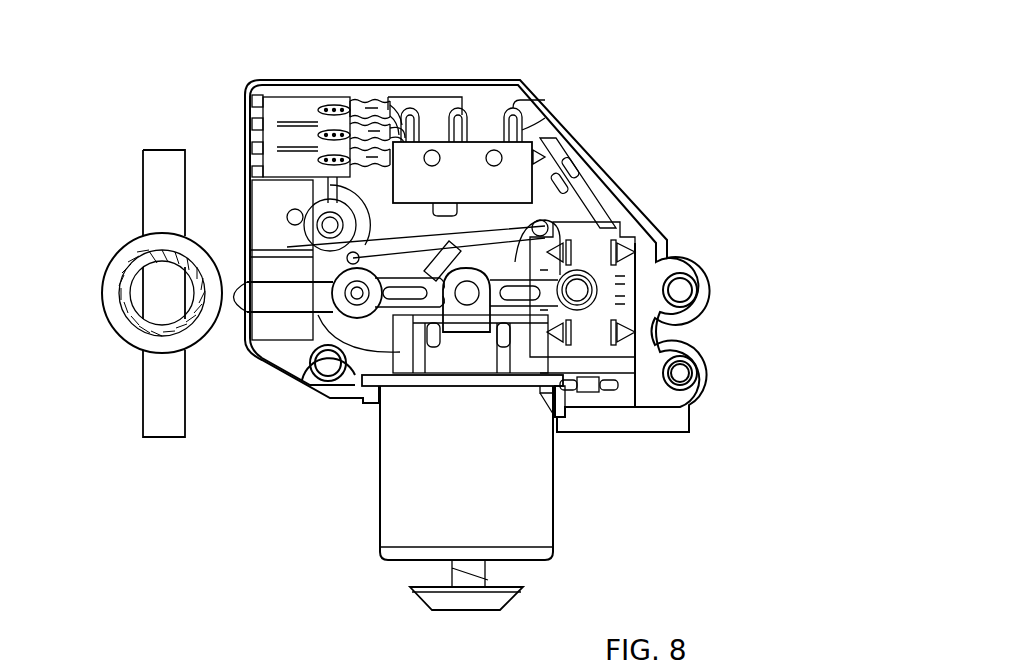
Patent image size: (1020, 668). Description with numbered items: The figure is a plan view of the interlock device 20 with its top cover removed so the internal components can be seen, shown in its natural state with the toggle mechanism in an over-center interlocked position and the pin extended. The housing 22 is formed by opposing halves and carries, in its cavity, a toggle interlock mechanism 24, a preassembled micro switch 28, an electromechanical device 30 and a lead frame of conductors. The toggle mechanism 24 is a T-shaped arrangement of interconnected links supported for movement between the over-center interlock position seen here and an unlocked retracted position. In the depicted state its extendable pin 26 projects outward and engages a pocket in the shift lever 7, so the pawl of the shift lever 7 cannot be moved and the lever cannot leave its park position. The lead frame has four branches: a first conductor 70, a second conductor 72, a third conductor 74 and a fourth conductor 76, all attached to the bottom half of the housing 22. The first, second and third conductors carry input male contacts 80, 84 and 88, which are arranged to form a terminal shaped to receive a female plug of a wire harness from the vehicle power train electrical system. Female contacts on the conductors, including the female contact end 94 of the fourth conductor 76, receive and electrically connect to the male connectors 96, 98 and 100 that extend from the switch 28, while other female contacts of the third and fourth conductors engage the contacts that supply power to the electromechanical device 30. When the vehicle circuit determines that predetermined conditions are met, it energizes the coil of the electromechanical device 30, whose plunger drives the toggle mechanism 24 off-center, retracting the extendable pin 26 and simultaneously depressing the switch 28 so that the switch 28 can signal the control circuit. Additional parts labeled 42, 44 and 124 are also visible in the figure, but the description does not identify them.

The shift lever 7 is at (127, 245).
The interlock device 20 is at (653, 130).
The housing 22 is at (660, 243).
The toggle interlock mechanism 24 is at (570, 207).
The extendable pin 26 is at (237, 303).
The micro switch 28 is at (550, 158).
The electromechanical device 30 is at (390, 522).
The cap 42 is at (427, 608).
The lever 44 is at (513, 280).
The first conductor 70 is at (358, 98).
The second conductor 72 is at (385, 100).
The third conductor 74 is at (600, 215).
The fourth conductor 76 is at (533, 375).
The male contact 80 is at (324, 106).
The male contact 84 is at (318, 133).
The male contact 88 is at (318, 160).
The female contact end 94 is at (522, 125).
The male connector 96 is at (527, 132).
The male connector 98 is at (470, 112).
The male connector 100 is at (418, 110).
The switch terminal 124 is at (508, 112).